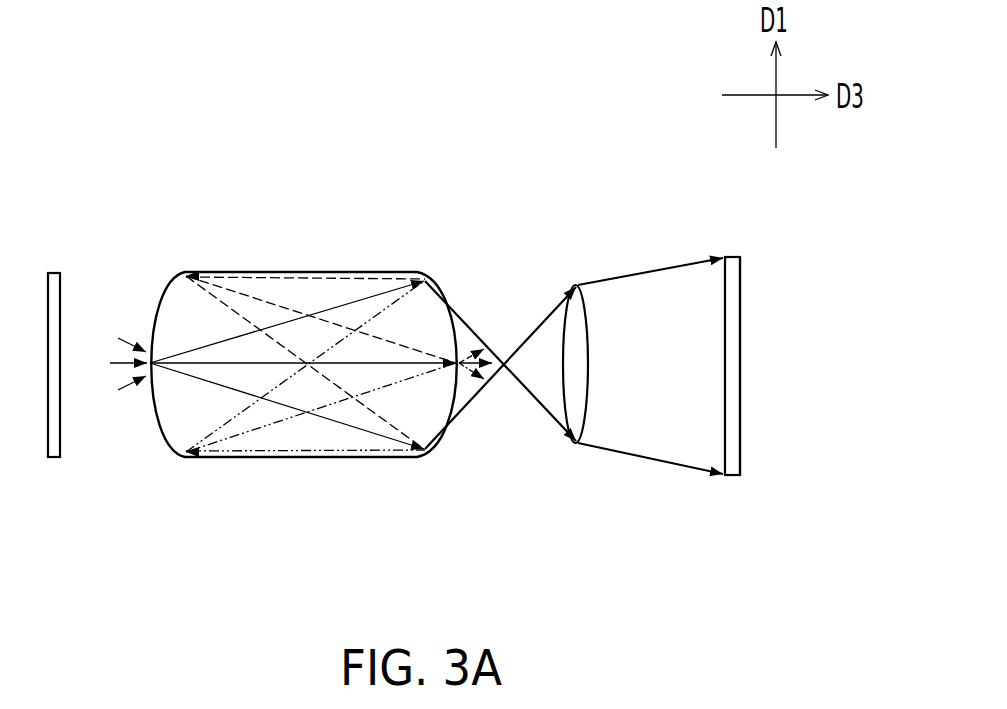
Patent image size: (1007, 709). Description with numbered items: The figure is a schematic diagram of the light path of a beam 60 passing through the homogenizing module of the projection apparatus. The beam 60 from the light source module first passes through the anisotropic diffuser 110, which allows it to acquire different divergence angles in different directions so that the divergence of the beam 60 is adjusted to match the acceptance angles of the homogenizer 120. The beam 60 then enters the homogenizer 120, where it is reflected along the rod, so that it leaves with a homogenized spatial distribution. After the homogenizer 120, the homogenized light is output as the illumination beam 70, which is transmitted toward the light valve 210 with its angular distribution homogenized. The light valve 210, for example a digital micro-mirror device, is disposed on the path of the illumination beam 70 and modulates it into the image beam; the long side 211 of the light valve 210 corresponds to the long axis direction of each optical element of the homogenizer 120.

The beam 60 is at (118, 338).
The illumination beam 70 is at (537, 403).
The anisotropic diffuser 110 is at (57, 271).
The homogenizer 120 is at (313, 440).
The light valve 210 is at (733, 255).
The long side 211 is at (741, 373).